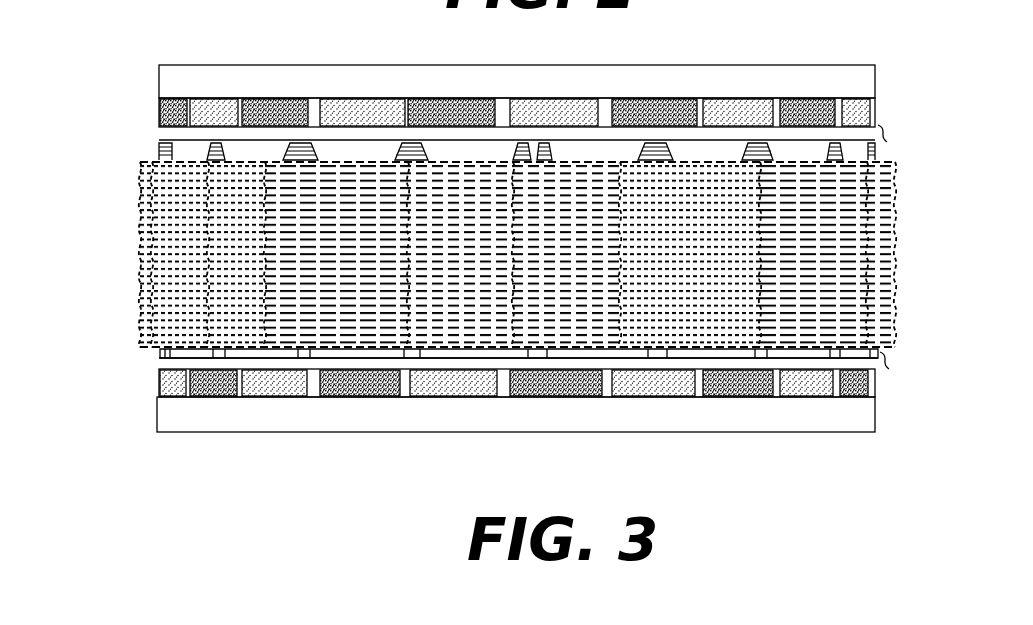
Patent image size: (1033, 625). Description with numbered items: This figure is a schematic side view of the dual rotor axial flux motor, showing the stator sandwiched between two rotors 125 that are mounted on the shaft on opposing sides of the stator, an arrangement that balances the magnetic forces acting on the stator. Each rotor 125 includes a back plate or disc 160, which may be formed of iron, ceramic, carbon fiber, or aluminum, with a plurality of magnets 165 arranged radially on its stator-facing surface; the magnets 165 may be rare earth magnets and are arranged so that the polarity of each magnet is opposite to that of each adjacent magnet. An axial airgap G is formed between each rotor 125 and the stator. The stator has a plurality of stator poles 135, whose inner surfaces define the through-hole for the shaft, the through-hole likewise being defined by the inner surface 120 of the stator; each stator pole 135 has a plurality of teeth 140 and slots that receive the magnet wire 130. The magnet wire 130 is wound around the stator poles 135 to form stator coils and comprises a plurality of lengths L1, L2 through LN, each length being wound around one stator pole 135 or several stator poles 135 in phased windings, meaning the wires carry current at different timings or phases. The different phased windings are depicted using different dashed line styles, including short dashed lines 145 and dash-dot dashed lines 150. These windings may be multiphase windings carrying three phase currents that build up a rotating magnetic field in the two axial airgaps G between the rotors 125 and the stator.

The inner surface of the stator 120 is at (598, 150).
The rotor 125 is at (812, 80).
The magnet wire 130 is at (345, 180).
The stator pole 135 is at (183, 152).
The teeth 140 is at (517, 151).
The short dashed lines 145 is at (185, 313).
The dash-dot dashed lines 150 is at (455, 180).
The disc 160 is at (702, 78).
The magnets 165 is at (857, 108).
The axial airgap G is at (884, 133).
The first length of magnet wire L1 is at (156, 179).
The second length of magnet wire L2 is at (227, 248).
The Nth length of magnet wire LN is at (882, 225).